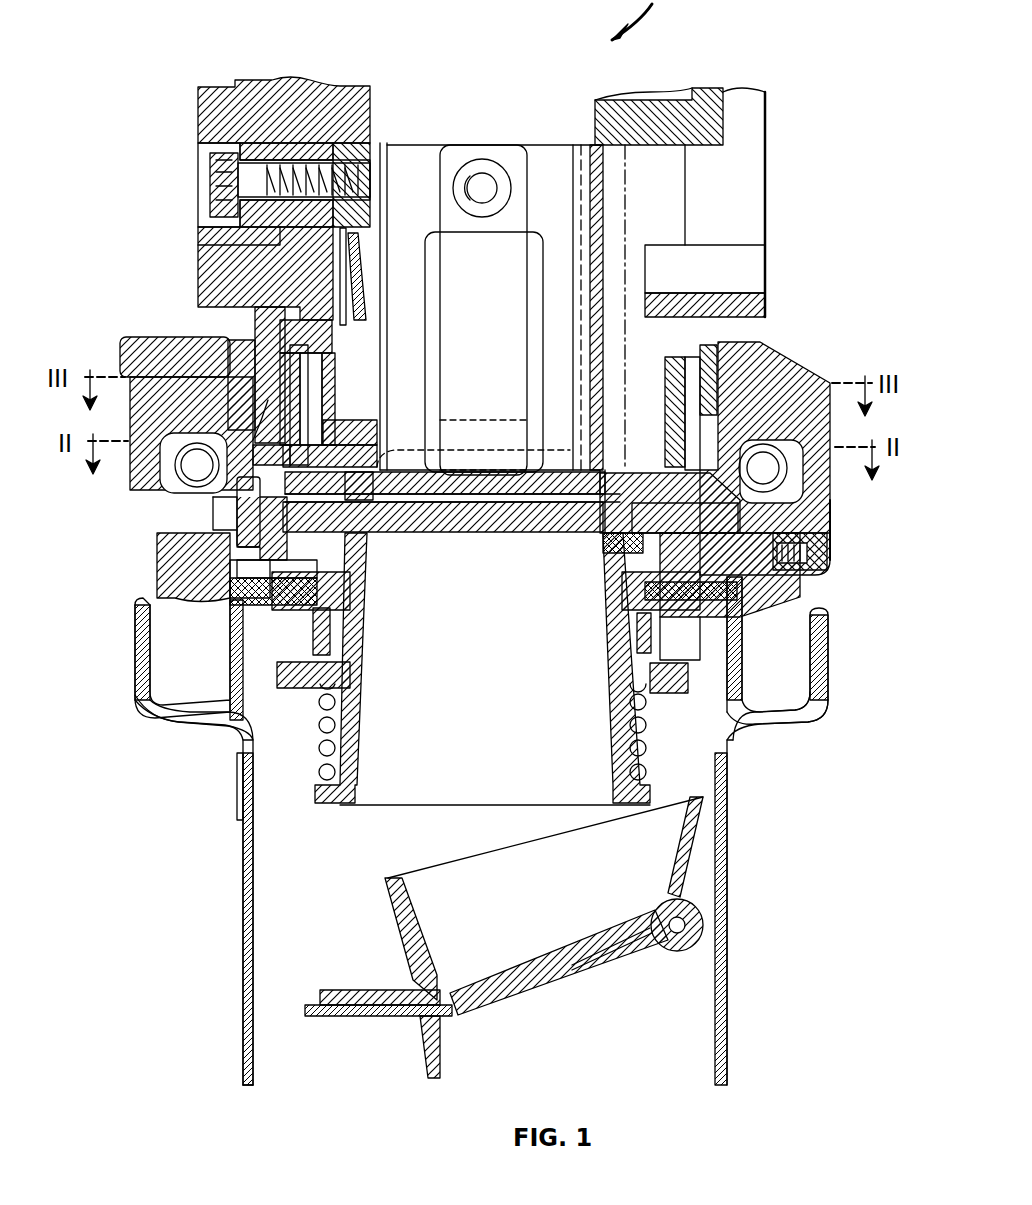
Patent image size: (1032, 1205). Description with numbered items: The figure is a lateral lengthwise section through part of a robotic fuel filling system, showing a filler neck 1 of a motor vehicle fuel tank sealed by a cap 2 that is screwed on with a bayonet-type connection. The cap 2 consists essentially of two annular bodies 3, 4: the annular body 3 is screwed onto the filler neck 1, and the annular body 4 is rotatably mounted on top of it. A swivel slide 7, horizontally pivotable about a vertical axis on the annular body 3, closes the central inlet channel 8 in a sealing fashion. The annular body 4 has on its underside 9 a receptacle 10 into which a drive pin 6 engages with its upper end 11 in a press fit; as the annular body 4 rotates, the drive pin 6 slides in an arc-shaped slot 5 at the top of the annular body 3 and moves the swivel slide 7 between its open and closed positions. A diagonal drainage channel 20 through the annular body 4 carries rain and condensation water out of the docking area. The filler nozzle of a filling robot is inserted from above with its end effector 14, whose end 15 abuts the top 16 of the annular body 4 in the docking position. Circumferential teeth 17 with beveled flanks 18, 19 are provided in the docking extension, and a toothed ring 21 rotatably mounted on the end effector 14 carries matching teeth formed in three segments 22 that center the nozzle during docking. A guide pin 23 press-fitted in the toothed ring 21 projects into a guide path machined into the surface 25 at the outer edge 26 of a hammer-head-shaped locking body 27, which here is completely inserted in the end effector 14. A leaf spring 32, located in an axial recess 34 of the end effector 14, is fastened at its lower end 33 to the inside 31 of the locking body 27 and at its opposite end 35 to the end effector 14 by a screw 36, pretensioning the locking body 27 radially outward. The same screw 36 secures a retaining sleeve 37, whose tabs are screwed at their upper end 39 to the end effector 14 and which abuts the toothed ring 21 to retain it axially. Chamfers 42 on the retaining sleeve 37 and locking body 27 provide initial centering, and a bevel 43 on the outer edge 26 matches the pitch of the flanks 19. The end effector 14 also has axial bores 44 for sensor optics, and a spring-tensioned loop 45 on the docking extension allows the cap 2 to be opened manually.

The filler neck 1 is at (735, 935).
The cap 2 is at (80, 320).
The annular body 3 is at (745, 617).
The annular body 4 is at (830, 507).
The slot 5 is at (235, 600).
The drive pin 6 is at (233, 555).
The swivel slide 7 is at (222, 605).
The central inlet channel 8 is at (507, 669).
The underside 9 is at (622, 557).
The receptacle 10 is at (240, 540).
The upper end 11 is at (355, 578).
The end effector 14 is at (722, 113).
The end 15 is at (600, 480).
The top 16 is at (640, 494).
The circumferential teeth 17 is at (250, 374).
The flank 18 is at (270, 328).
The flank 19 is at (240, 450).
The drainage channel 20 is at (825, 560).
The toothed ring 21 is at (710, 330).
The segments 22 is at (720, 355).
The guide pin 23 is at (312, 318).
The surface 25 is at (340, 400).
The outer edge 26 is at (210, 480).
The locking body 27 is at (335, 425).
The inside 31 is at (345, 452).
The leaf spring 32 is at (425, 317).
The lower end 33 is at (418, 490).
The axial recess 34 is at (367, 283).
The end 35 is at (365, 140).
The screw 36 is at (267, 180).
The retaining sleeve 37 is at (670, 505).
The upper end 39 is at (352, 150).
The chamfers 42 is at (800, 530).
The bevel 43 is at (240, 395).
The axial bores 44 is at (660, 300).
The loop 45 is at (152, 345).